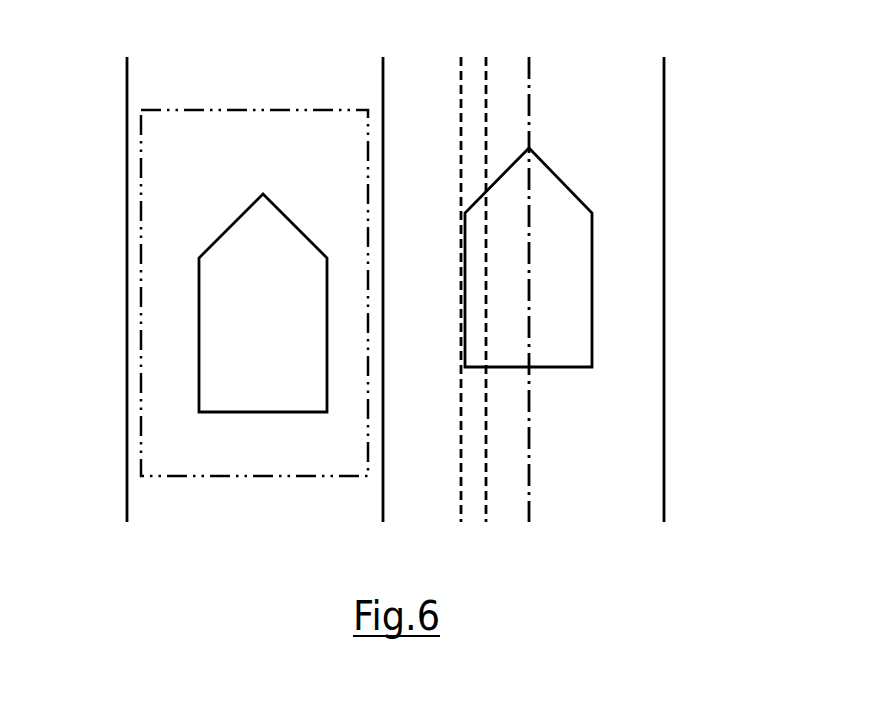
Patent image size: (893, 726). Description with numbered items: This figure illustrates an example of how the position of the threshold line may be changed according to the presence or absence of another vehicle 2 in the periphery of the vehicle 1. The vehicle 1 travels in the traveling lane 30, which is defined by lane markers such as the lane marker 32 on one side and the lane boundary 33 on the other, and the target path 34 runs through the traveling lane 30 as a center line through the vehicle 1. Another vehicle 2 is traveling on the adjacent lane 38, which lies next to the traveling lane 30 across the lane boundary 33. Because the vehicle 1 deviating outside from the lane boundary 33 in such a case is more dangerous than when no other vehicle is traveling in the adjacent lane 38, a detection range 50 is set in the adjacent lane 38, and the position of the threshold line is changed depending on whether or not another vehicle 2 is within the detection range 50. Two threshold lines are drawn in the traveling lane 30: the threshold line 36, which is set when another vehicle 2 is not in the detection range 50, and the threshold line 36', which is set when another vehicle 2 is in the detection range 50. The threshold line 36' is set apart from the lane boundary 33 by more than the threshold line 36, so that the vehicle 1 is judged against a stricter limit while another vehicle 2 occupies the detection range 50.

The vehicle 1 is at (592, 275).
The another vehicle 2 is at (199, 268).
The traveling lane 30 is at (616, 85).
The lane marker 32 is at (665, 332).
The lane boundary 33 is at (383, 103).
The target path 34 is at (531, 116).
The threshold line 36 is at (436, 267).
The threshold line 36' is at (510, 265).
The adjacent lane 38 is at (183, 97).
The detection range 50 is at (140, 178).